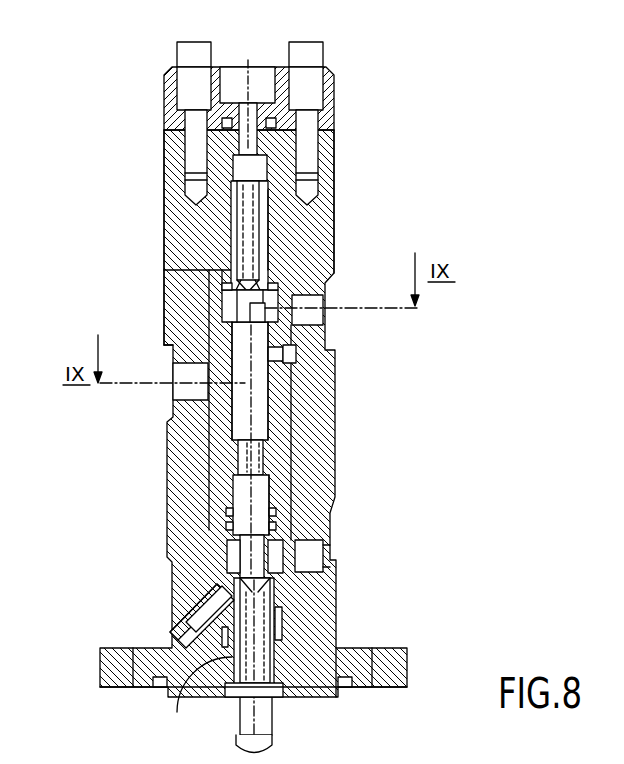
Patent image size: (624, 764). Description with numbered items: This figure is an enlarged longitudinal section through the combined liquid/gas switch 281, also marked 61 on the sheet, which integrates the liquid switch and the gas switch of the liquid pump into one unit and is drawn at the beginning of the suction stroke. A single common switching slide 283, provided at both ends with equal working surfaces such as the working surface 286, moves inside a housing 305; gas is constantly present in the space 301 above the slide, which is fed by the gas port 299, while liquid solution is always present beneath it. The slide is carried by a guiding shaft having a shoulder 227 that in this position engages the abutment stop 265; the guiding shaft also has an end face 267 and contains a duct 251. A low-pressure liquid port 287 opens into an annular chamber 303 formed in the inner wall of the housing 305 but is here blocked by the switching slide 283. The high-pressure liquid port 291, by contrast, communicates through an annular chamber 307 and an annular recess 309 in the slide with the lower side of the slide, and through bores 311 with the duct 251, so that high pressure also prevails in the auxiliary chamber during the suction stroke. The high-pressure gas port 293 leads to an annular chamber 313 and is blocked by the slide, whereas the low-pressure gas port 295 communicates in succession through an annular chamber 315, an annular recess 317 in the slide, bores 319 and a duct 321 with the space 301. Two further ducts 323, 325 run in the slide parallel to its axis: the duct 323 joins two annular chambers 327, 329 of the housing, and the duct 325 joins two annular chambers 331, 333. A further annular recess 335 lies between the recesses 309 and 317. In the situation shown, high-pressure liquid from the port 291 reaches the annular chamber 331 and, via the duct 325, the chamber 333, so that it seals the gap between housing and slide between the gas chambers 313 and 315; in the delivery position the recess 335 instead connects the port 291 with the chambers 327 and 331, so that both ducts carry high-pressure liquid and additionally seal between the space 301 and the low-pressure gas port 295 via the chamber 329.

The valve 61 is at (150, 232).
The combined liquid/gas switch 281 is at (82, 246).
The shoulder 227 is at (277, 694).
The duct 251 is at (322, 697).
The abutment stop 265 is at (216, 694).
The end face 267 is at (270, 742).
The switching slide 283 is at (267, 460).
The working surface 286 is at (283, 640).
The low-pressure liquid port 287 is at (190, 620).
The high-pressure liquid port 291 is at (313, 562).
The high-pressure gas port 293 is at (182, 392).
The low-pressure gas port 295 is at (320, 313).
The gas port 299 is at (236, 78).
The space 301 is at (254, 165).
The annular chamber 303 is at (222, 613).
The housing 305 is at (186, 214).
The annular chamber 307 is at (322, 560).
The annular recess 309 is at (228, 553).
The bores 311 is at (236, 576).
The annular chamber 313 is at (167, 346).
The annular chamber 315 is at (285, 352).
The annular recess 317 is at (228, 291).
The bores 319 is at (186, 281).
The duct 321 is at (268, 222).
The duct 323 is at (222, 300).
The duct 325 is at (290, 438).
The annular chamber 327 is at (226, 508).
The annular chamber 329 is at (216, 262).
The annular chamber 331 is at (283, 523).
The annular chamber 333 is at (300, 363).
The annular recess 335 is at (295, 464).